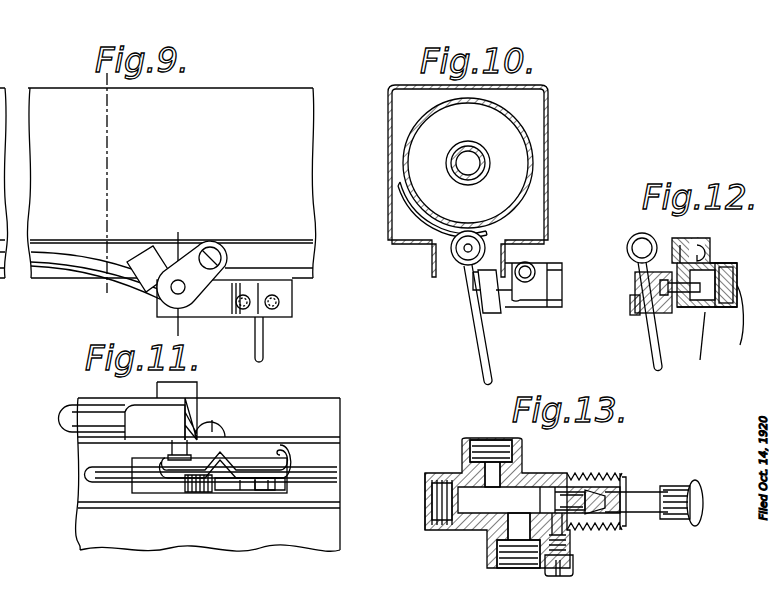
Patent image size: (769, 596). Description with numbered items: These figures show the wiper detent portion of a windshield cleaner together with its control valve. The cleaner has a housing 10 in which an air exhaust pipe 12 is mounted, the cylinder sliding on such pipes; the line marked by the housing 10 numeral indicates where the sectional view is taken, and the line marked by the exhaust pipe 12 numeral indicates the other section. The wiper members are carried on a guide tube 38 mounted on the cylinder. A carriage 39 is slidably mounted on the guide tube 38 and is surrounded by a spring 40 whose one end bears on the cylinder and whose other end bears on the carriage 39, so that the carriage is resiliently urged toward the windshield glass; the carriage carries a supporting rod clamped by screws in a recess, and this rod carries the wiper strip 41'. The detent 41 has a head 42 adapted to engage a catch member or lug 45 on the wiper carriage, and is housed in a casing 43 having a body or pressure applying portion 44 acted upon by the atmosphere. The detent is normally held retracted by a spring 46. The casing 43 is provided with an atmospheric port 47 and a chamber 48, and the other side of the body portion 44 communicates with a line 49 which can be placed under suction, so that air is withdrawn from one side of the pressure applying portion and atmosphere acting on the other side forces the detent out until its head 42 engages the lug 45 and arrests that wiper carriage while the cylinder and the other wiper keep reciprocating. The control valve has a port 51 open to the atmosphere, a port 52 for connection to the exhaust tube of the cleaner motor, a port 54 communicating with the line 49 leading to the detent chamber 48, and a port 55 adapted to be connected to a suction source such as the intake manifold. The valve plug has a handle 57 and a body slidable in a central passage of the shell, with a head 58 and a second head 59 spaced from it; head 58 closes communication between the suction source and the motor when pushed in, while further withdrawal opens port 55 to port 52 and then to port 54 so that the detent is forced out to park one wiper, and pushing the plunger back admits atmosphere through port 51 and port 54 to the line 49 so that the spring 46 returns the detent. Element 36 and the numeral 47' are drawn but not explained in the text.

In FIG. 9, the housing 10 is at (105, 73).
In FIG. 9, the air exhaust pipe 12 is at (157, 332).
In FIG. 10, the roller 36 is at (460, 262).
In FIG. 11, the guide tube 38 is at (327, 476).
In FIG. 9, the carriage 39 is at (289, 297).
In FIG. 11, the carriage 39 is at (270, 490).
In FIG. 11, the spring 40 is at (206, 492).
In FIG. 10, the spring 40 is at (427, 227).
In FIG. 11, the detent 41 is at (225, 425).
In FIG. 10, the detent 41 is at (500, 315).
In FIG. 12, the detent 41 is at (636, 302).
In FIG. 10, the wiper strip 41' is at (462, 328).
In FIG. 11, the head 42 is at (195, 462).
In FIG. 12, the head 42 is at (675, 268).
In FIG. 10, the casing 43 is at (544, 305).
In FIG. 12, the casing 43 is at (722, 280).
In FIG. 12, the body or pressure applying portion 44 is at (705, 296).
In FIG. 11, the catch member or lug 45 is at (168, 455).
In FIG. 12, the catch member or lug 45 is at (668, 314).
In FIG. 12, the spring 46 is at (703, 346).
In FIG. 9, the atmospheric port 47 is at (163, 284).
In FIG. 12, the atmospheric port 47 is at (751, 322).
In FIG. 9, the rod 47' is at (281, 339).
In FIG. 12, the chamber 48 is at (730, 262).
In FIG. 9, the line 49 is at (97, 279).
In FIG. 11, the line 49 is at (92, 420).
In FIG. 10, the line 49 is at (533, 272).
In FIG. 13, the port 51 is at (681, 485).
In FIG. 13, the port 52 is at (496, 430).
In FIG. 13, the port 54 is at (524, 566).
In FIG. 13, the port 55 is at (432, 509).
In FIG. 13, the handle 57 is at (566, 474).
In FIG. 13, the head 58 is at (530, 495).
In FIG. 13, the second head 59 is at (600, 478).